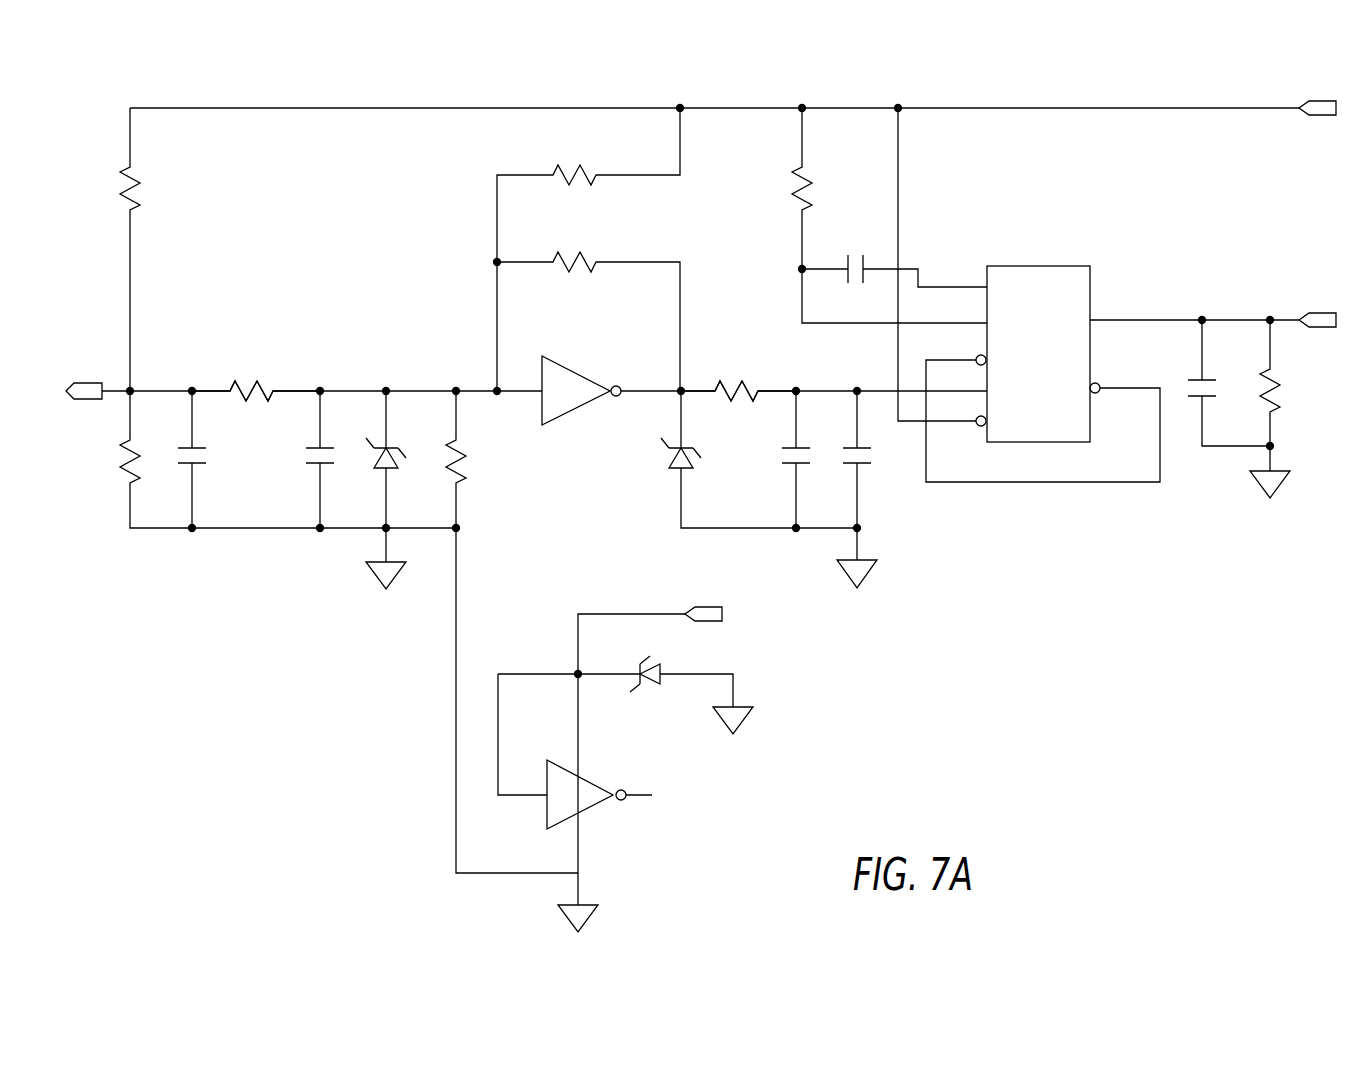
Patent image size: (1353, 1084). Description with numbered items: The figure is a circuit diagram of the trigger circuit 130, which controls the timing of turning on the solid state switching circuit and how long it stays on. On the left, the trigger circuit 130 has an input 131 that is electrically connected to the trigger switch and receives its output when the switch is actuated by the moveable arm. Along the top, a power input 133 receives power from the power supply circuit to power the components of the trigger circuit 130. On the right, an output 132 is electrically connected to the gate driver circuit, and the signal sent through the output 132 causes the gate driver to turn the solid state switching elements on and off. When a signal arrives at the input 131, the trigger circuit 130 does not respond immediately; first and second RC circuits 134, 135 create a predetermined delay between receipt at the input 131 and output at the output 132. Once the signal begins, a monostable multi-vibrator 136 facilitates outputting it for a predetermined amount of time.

The trigger circuit 130 is at (126, 89).
The input 131 is at (84, 382).
The output 132 is at (1308, 312).
The power input 133 is at (1306, 99).
The first RC circuit 134 is at (292, 378).
The second RC circuit 135 is at (773, 383).
The monostable multi-vibrator 136 is at (1142, 494).